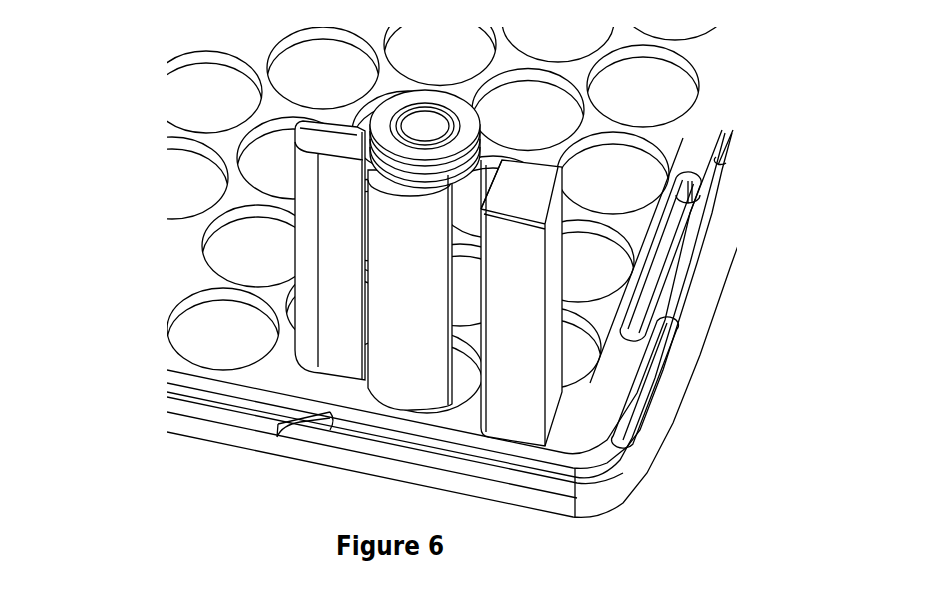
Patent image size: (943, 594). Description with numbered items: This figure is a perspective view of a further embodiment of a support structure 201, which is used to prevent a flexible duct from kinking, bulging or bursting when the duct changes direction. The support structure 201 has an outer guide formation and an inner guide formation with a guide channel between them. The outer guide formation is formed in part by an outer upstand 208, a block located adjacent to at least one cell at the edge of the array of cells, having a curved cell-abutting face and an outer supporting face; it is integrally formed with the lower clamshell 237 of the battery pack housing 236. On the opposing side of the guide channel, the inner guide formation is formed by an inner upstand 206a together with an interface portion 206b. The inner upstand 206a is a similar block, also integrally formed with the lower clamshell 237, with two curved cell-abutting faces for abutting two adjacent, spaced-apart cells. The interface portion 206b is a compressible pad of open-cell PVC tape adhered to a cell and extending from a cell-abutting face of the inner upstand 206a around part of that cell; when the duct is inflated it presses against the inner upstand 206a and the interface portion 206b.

The support structure 201 is at (454, 280).
The inner upstand 206a is at (303, 243).
The interface portion 206b is at (400, 393).
The outer upstand 208 is at (532, 330).
The battery pack housing 236 is at (479, 347).
The lower clamshell 237 is at (578, 438).